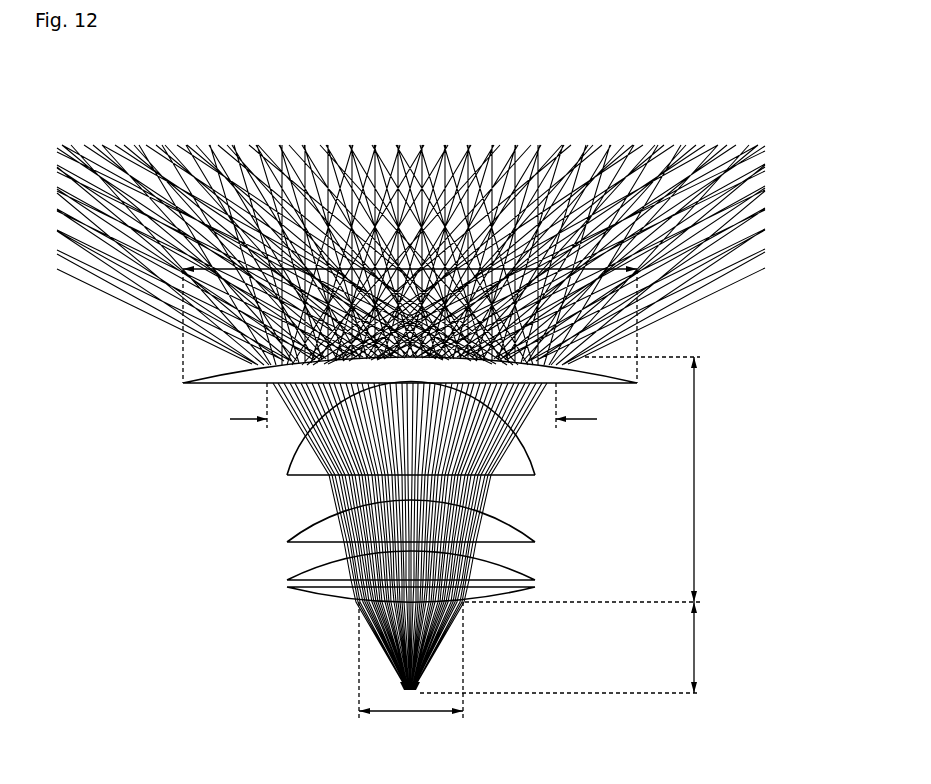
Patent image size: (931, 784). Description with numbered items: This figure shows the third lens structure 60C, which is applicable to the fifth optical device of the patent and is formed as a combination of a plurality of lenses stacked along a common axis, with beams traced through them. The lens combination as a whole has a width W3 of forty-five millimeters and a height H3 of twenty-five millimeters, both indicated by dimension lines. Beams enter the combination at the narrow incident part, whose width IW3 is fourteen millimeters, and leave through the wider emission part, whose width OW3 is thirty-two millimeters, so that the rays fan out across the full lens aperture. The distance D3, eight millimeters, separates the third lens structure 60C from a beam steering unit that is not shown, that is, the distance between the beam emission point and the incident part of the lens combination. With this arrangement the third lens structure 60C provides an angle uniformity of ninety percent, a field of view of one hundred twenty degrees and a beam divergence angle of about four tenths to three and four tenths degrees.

The third lens structure 60C is at (793, 118).
The width W3 is at (410, 314).
The width of emission part OW3 is at (385, 406).
The height H3 is at (595, 479).
The distance D3 is at (572, 647).
The width of incident part IW3 is at (411, 669).